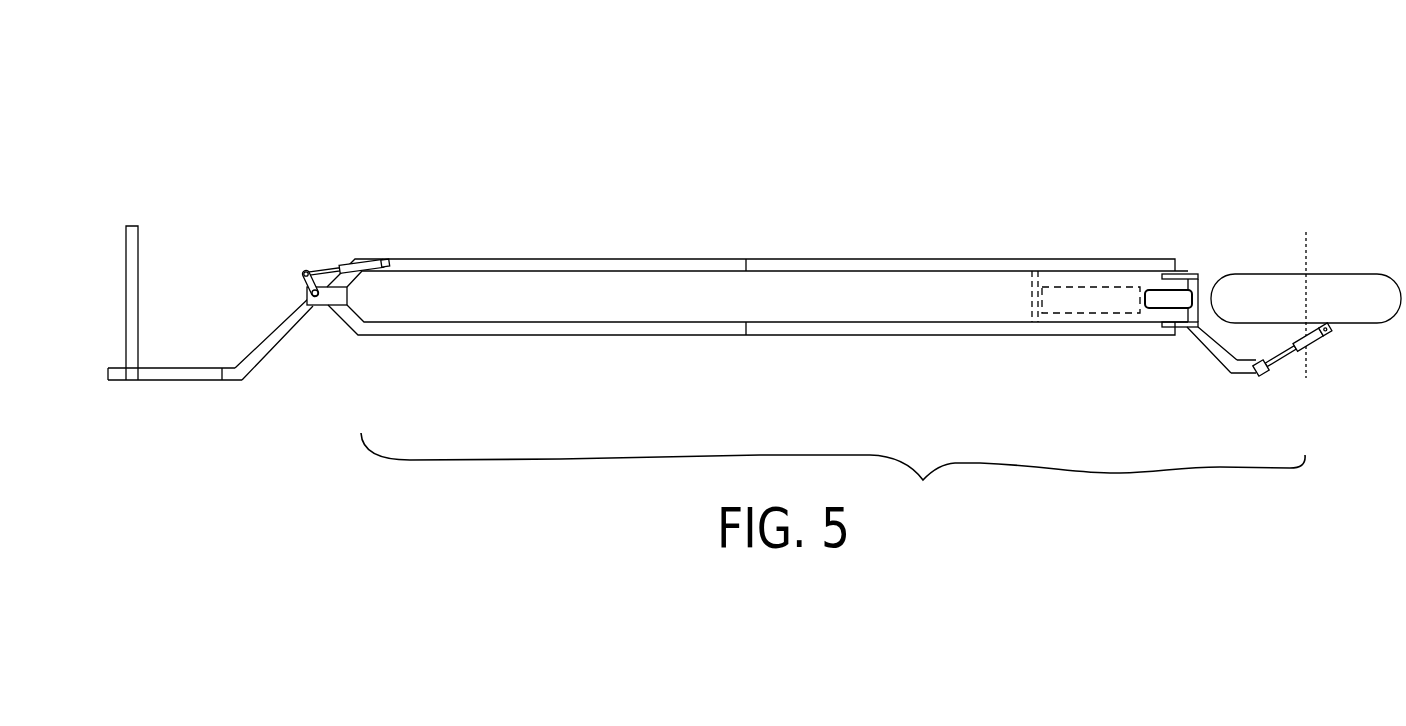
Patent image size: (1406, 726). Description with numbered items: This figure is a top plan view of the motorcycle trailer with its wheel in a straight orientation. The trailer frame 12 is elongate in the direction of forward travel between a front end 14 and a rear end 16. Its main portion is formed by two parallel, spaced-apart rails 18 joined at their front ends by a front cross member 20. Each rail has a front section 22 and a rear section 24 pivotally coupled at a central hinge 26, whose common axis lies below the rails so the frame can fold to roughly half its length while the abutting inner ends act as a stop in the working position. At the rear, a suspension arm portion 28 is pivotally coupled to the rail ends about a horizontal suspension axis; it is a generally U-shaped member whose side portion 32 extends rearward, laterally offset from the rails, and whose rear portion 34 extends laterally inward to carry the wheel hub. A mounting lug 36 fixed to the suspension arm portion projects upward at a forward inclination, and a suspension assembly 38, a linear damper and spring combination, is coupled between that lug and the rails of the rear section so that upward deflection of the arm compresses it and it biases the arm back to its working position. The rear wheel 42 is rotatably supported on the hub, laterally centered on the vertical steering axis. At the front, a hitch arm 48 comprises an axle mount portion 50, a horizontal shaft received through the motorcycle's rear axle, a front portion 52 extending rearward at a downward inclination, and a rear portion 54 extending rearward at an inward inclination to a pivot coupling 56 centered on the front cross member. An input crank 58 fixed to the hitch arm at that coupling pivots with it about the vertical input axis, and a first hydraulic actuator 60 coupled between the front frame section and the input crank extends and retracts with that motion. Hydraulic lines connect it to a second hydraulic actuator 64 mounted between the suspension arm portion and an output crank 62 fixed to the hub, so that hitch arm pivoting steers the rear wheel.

The trailer frame 12 is at (833, 480).
The front end 14 is at (335, 128).
The rear end 16 is at (1262, 127).
The rails 18 is at (757, 302).
The front cross member 20 is at (347, 318).
The front section 22 is at (478, 260).
The rear section 24 is at (853, 260).
The central hinge 26 is at (746, 258).
The suspension arm portion 28 is at (1200, 304).
The side portion 32 is at (1245, 373).
The rear portion 34 is at (1300, 328).
The mounting lug 36 is at (1155, 295).
The suspension assembly 38 is at (1072, 287).
The rear wheel 42 is at (1328, 289).
The hitch arm 48 is at (210, 351).
The axle mount portion 50 is at (136, 290).
The front portion 52 is at (168, 372).
The rear portion 54 is at (274, 350).
The pivot coupling 56 is at (312, 289).
The input crank 58 is at (304, 284).
The first hydraulic actuator 60 is at (340, 265).
The output crank 62 is at (1332, 329).
The second hydraulic actuator 64 is at (1290, 357).